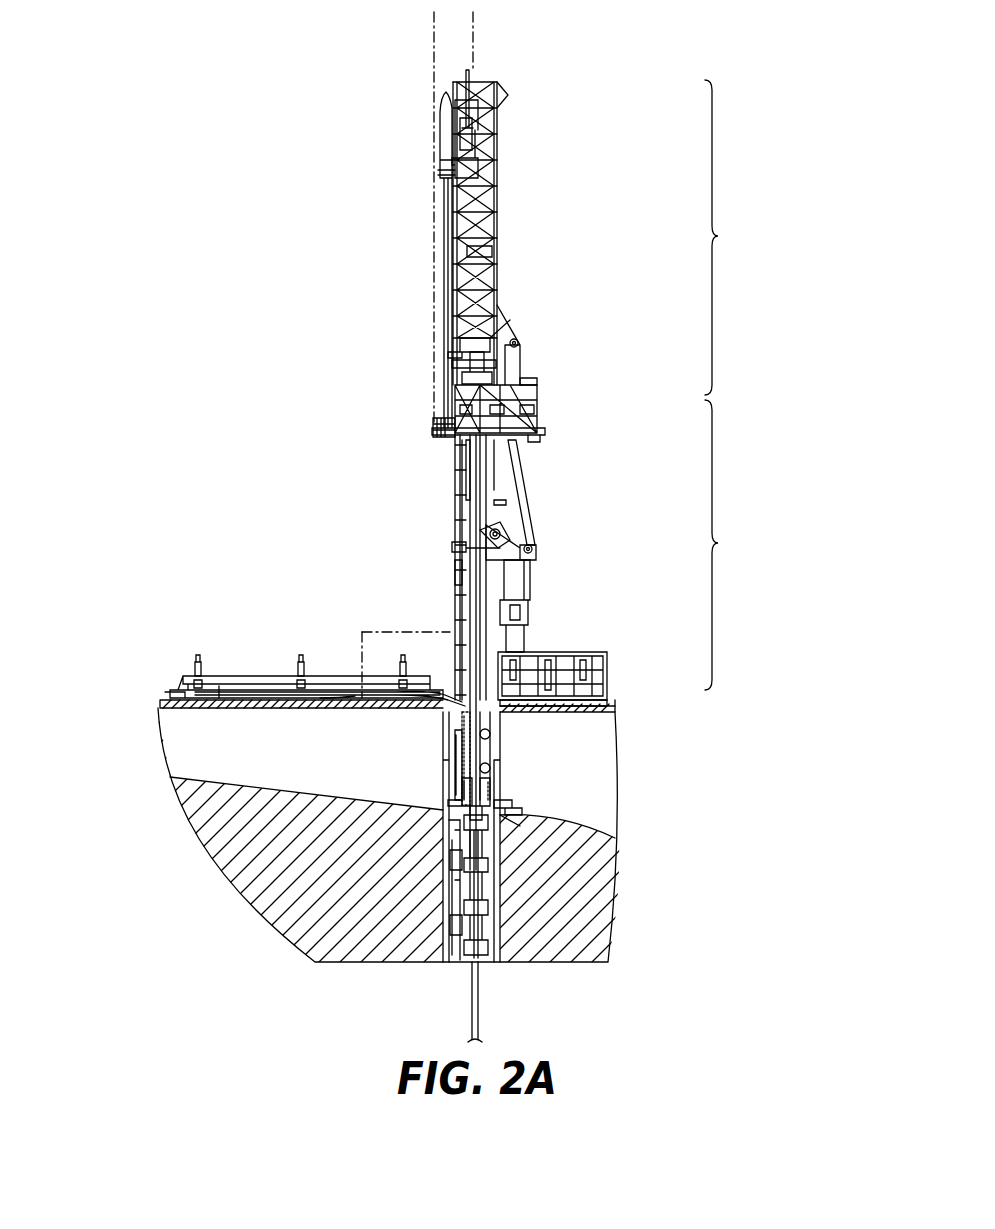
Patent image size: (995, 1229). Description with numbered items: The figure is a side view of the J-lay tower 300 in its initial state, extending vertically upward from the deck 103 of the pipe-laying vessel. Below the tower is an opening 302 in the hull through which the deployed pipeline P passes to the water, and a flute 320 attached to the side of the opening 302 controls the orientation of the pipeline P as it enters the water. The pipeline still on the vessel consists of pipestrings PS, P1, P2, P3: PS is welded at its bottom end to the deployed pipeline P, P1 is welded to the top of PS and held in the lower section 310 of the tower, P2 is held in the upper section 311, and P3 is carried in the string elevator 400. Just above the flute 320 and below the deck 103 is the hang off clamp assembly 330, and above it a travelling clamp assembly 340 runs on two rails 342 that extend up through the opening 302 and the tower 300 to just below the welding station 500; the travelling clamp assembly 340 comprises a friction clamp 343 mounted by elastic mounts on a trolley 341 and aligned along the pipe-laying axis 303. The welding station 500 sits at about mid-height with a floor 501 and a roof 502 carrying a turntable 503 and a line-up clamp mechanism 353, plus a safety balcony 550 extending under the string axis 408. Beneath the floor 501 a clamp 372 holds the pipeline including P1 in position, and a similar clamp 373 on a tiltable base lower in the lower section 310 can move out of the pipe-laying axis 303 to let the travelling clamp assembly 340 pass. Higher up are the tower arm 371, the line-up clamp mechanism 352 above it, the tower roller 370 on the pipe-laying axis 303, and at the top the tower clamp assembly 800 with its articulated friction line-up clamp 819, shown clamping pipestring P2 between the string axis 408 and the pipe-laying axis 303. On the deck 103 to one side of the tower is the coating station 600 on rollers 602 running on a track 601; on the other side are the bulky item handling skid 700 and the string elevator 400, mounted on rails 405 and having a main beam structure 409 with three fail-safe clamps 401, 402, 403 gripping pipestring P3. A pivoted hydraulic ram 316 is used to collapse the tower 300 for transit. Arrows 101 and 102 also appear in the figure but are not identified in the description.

The downhole direction 101 is at (628, 807).
The surface direction 102 is at (158, 737).
The deck 103 is at (168, 708).
The J-lay tower 300 is at (518, 164).
The opening 302 is at (492, 863).
The pipe-laying axis 303 is at (473, 48).
The lower section of the tower 310 is at (727, 545).
The upper section of the tower 311 is at (727, 237).
The pivoted hydraulic ram 316 is at (527, 516).
The flute 320 is at (443, 920).
The hang off clamp assembly 330 is at (490, 791).
The travelling clamp assembly 340 is at (461, 750).
The trolley 341 is at (490, 746).
The rails 342 is at (500, 519).
The friction clamp 343 is at (455, 761).
The line-up clamp mechanism 352 is at (460, 346).
The line-up clamp mechanism 353 is at (462, 379).
The tower roller 370 is at (492, 252).
The tower arm 371 is at (452, 365).
The clamp 372 is at (455, 463).
The clamp 373 is at (452, 544).
The string elevator 400 is at (211, 643).
The clamp 401 is at (362, 632).
The clamp 402 is at (300, 662).
The clamp 403 is at (198, 655).
The rails 405 is at (455, 593).
The string axis 408 is at (434, 30).
The main beam structure 409 is at (325, 696).
The welding station 500 is at (538, 405).
The floor 501 is at (532, 443).
The roof 502 is at (538, 384).
The turntable 503 is at (500, 366).
The safety balcony 550 is at (433, 429).
The coating station 600 is at (560, 652).
The track 601 is at (560, 703).
The rollers 602 is at (610, 708).
The bulky item handling skid 700 is at (352, 631).
The tower clamp assembly 800 is at (440, 142).
The articulated friction line-up clamp 819 is at (438, 172).
The deployed pipeline P is at (478, 1006).
The pipestring P1 is at (476, 603).
The pipestring P2 is at (446, 235).
The pipestring P3 is at (220, 684).
The pipestring PS is at (455, 729).